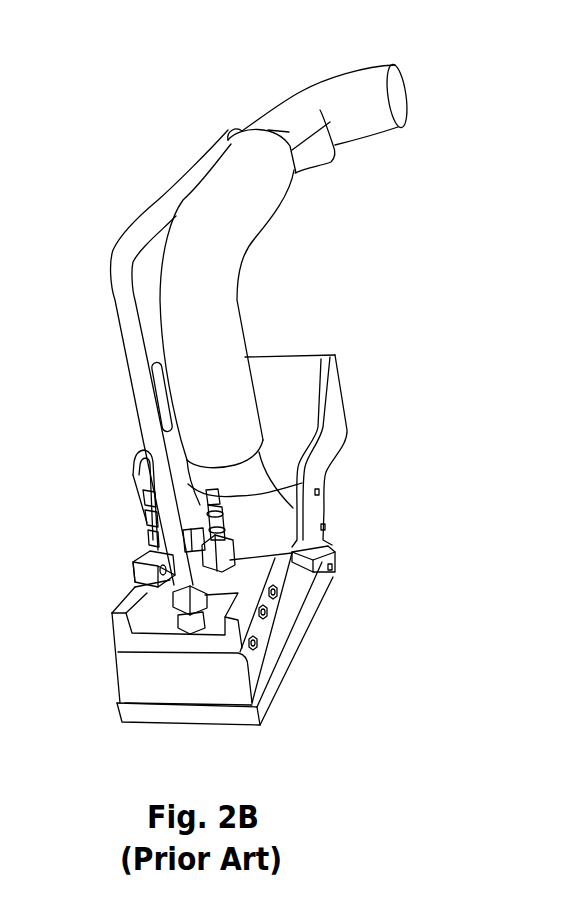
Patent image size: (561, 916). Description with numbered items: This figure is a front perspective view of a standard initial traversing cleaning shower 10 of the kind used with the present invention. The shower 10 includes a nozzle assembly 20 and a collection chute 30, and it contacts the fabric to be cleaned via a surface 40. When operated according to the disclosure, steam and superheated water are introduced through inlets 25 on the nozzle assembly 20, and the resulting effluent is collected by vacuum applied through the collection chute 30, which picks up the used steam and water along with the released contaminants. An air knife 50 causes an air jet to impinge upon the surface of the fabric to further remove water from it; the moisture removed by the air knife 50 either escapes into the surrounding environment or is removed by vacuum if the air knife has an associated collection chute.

The traversing shower 10 is at (394, 323).
The nozzle assembly 20 is at (120, 663).
The inlets 25 is at (302, 483).
The collection chute 30 is at (237, 126).
The surface 40 is at (275, 700).
The air knife 50 is at (336, 560).